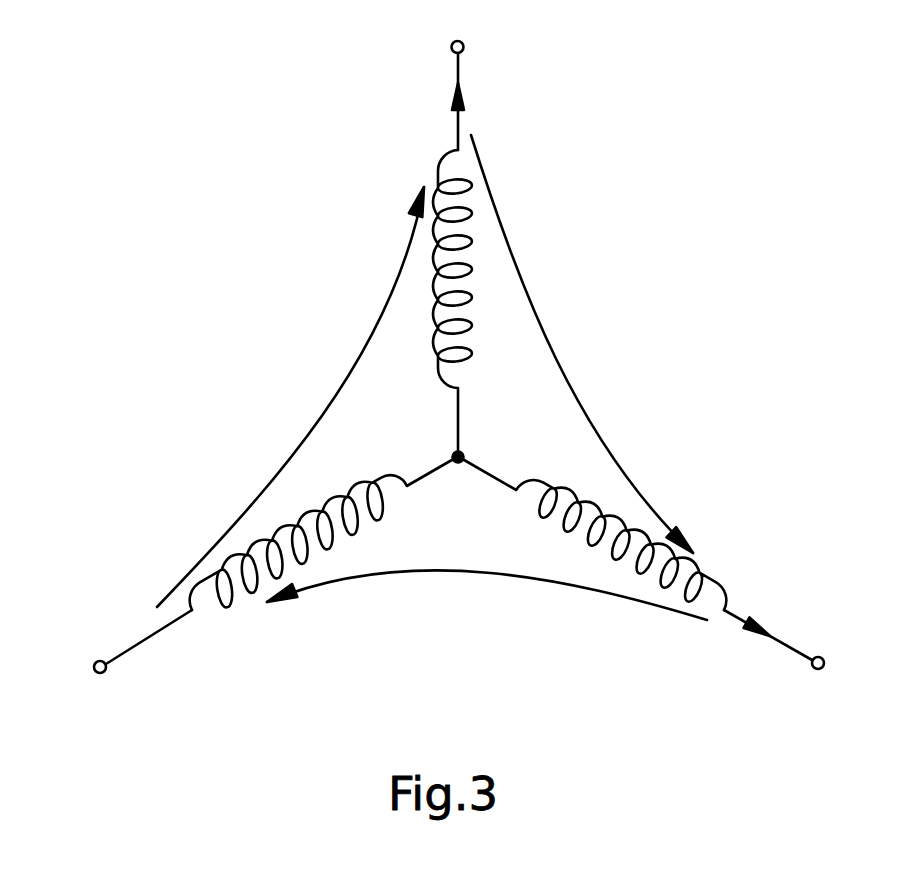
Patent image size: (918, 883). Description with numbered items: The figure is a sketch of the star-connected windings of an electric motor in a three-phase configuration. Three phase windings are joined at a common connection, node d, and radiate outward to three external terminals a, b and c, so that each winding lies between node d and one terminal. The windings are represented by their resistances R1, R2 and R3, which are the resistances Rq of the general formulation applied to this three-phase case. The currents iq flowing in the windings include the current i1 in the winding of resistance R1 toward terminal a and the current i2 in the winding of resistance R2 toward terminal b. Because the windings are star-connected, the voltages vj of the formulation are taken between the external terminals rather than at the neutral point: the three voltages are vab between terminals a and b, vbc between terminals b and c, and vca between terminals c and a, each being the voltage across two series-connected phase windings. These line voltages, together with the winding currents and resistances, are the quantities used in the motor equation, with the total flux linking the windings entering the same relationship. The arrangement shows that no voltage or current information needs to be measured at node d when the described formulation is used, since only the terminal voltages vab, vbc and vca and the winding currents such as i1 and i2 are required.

The resistance R1 is at (432, 289).
The resistance R2 is at (608, 534).
The resistance R3 is at (324, 557).
The terminal a is at (456, 75).
The terminal b is at (789, 650).
The terminal c is at (131, 653).
The node d is at (472, 443).
The current i1 is at (474, 89).
The current i2 is at (776, 612).
The voltage vab is at (582, 344).
The voltage vbc is at (487, 601).
The voltage vca is at (290, 397).